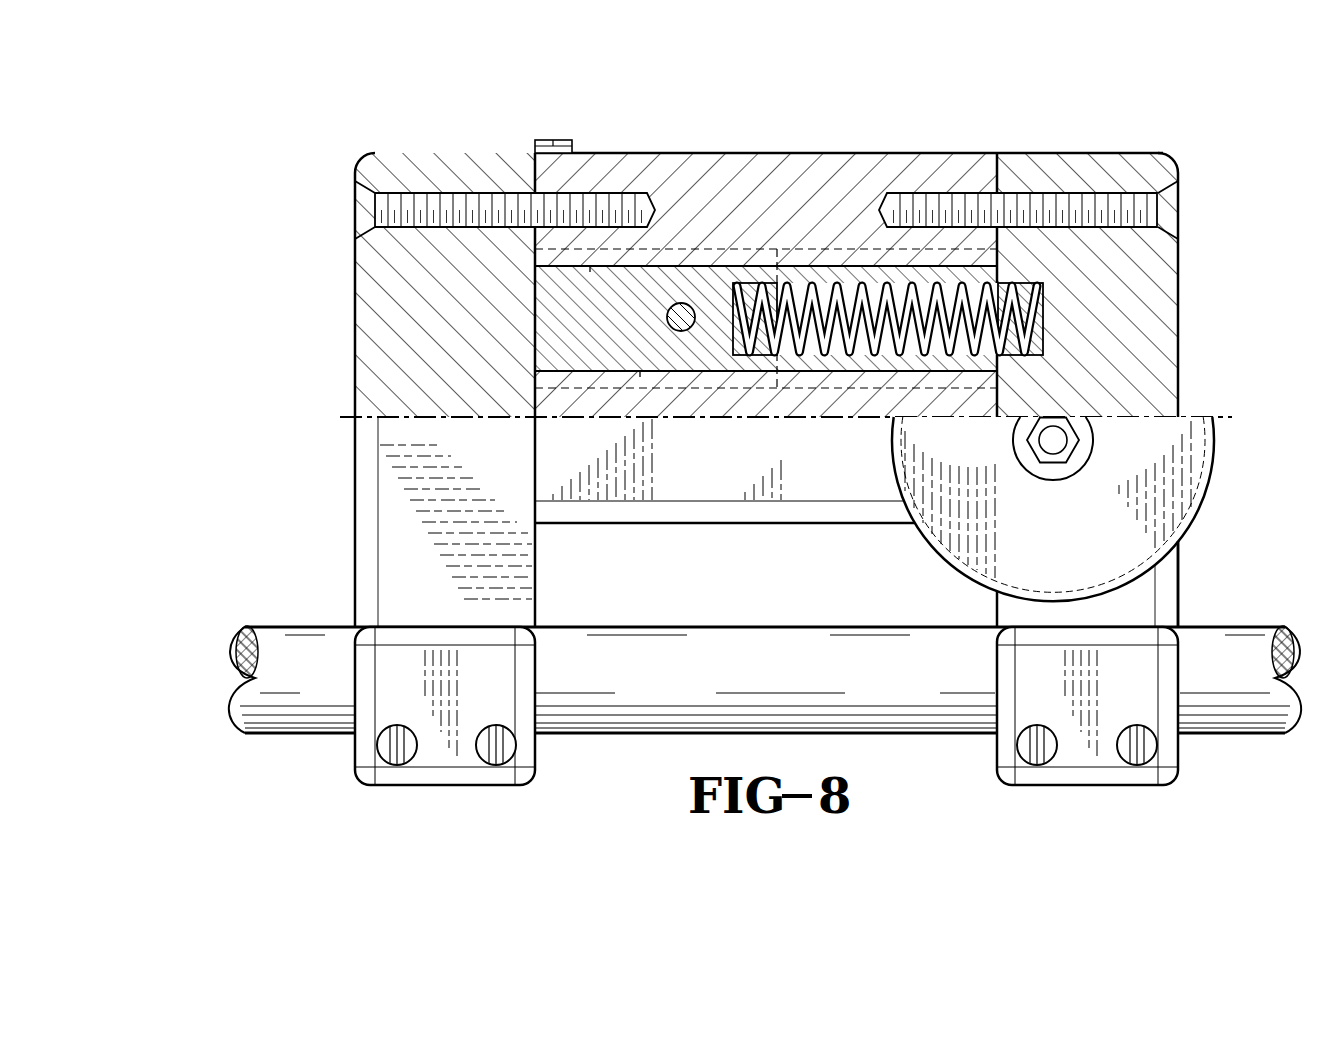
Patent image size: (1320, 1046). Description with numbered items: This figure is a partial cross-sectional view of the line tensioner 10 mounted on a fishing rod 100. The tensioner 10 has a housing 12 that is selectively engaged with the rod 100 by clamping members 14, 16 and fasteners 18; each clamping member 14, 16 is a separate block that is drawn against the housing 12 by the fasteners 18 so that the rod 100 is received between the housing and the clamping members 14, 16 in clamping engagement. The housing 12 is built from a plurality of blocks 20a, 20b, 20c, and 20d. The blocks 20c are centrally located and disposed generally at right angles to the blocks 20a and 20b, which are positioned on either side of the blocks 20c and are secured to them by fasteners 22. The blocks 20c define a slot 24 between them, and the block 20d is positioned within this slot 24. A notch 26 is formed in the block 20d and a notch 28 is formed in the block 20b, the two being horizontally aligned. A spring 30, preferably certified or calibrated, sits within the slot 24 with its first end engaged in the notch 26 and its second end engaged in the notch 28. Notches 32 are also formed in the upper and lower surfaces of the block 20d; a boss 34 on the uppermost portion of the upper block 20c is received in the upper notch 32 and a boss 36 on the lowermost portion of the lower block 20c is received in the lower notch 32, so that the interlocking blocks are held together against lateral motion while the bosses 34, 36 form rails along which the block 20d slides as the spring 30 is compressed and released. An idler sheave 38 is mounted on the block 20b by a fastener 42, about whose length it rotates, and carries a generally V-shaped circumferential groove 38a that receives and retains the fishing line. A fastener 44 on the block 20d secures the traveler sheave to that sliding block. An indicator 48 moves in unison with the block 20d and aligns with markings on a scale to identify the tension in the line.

The line tensioner 10 is at (1028, 116).
The housing 12 is at (652, 151).
The clamping member 14 is at (450, 786).
The clamping member 16 is at (1090, 786).
The fasteners 18 is at (402, 756).
The block 20a is at (353, 322).
The block 20b is at (1180, 276).
The blocks 20c is at (782, 155).
The block 20d is at (543, 320).
The fasteners 22 is at (366, 205).
The slot 24 is at (818, 360).
The notch 26 is at (728, 340).
The notch 28 is at (1040, 300).
The spring 30 is at (818, 268).
The notches 32 is at (598, 268).
The boss 34 is at (840, 255).
The boss 36 is at (872, 381).
The idler sheave 38 is at (1186, 452).
The circumferential groove 38a is at (948, 553).
The fastener 42 is at (1062, 446).
The fastener 44 is at (690, 304).
The indicator 48 is at (537, 139).
The fishing rod 100 is at (290, 622).